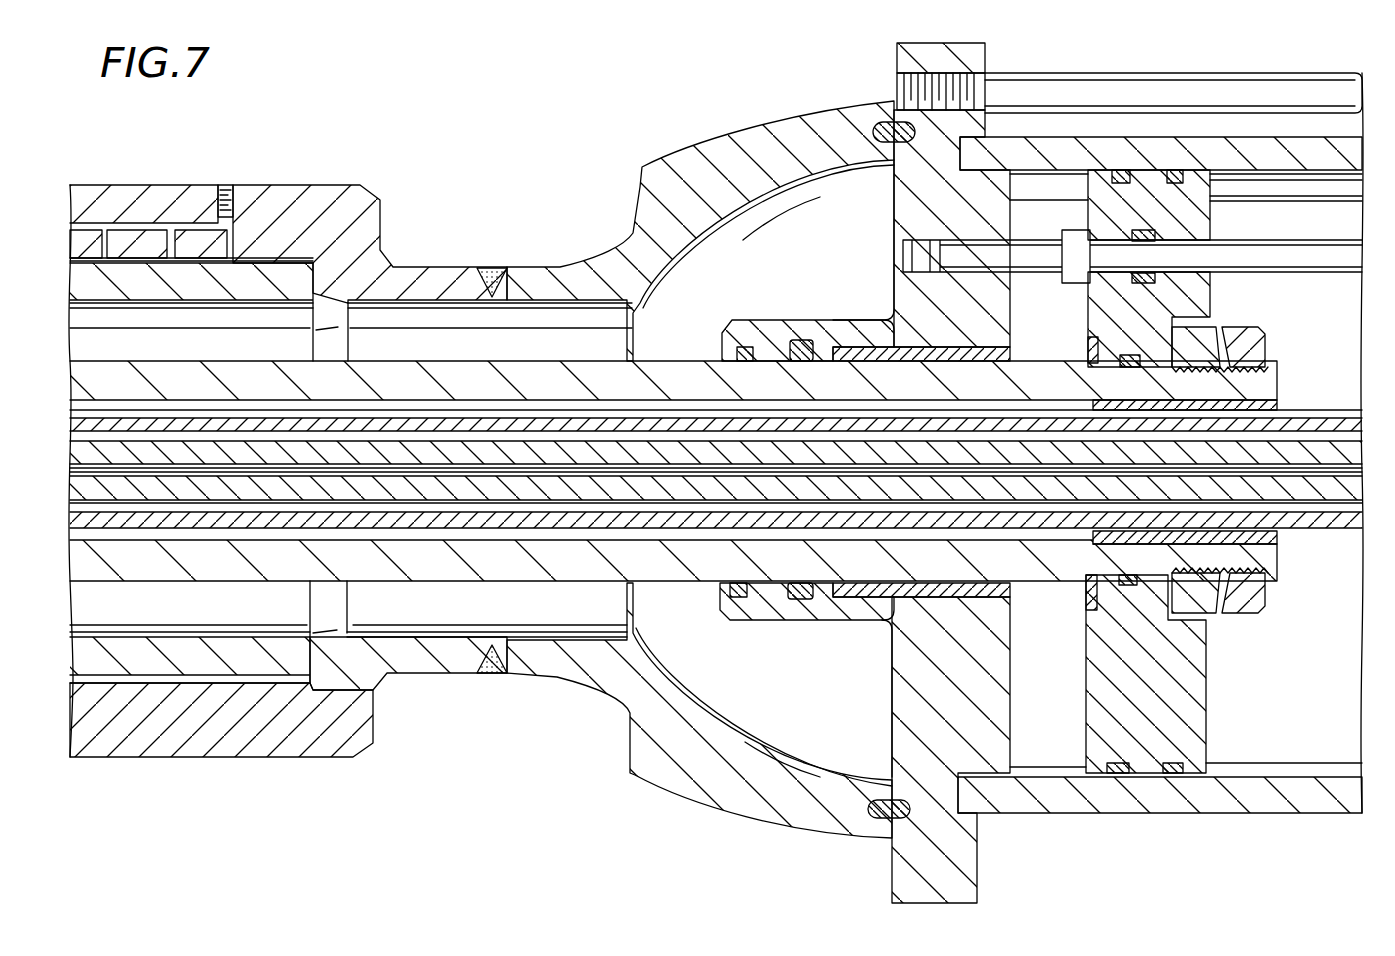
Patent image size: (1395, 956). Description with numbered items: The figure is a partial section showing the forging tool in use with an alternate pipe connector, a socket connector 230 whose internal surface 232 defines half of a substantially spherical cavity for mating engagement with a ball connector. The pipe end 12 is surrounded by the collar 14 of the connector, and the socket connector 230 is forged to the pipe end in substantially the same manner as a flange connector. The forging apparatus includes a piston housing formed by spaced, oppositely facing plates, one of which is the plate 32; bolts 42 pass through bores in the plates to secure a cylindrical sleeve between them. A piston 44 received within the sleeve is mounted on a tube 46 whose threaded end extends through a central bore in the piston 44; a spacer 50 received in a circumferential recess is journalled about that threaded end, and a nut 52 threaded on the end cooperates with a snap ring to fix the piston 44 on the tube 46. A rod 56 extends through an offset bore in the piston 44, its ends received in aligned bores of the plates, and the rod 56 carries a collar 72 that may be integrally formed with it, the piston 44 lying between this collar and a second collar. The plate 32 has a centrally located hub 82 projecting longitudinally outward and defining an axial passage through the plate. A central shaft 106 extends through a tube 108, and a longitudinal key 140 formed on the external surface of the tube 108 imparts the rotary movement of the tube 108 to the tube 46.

The pipe end 12 is at (277, 280).
The collar 14 is at (174, 190).
The plate 32 is at (901, 56).
The bolts 42 is at (1115, 88).
The piston 44 is at (1146, 752).
The tube 46 is at (453, 373).
The spacer 50 is at (1207, 618).
The nut 52 is at (1257, 338).
The rod 56 is at (1250, 254).
The collar 72 is at (1072, 278).
The hub 82 is at (801, 340).
The central shaft 106 is at (448, 490).
The tube 108 is at (547, 377).
The longitudinal key 140 is at (1317, 417).
The socket connector 230 is at (779, 138).
The internal surface 232 is at (717, 717).